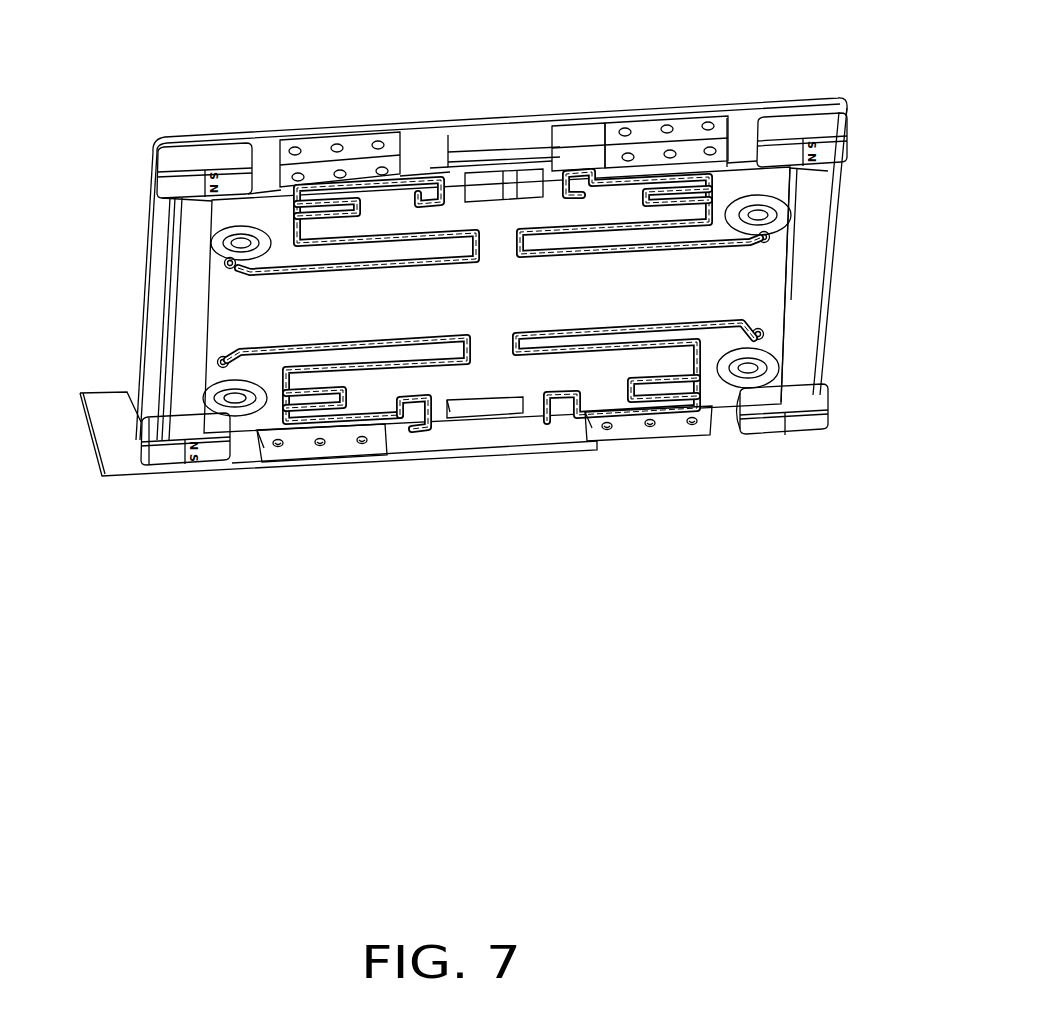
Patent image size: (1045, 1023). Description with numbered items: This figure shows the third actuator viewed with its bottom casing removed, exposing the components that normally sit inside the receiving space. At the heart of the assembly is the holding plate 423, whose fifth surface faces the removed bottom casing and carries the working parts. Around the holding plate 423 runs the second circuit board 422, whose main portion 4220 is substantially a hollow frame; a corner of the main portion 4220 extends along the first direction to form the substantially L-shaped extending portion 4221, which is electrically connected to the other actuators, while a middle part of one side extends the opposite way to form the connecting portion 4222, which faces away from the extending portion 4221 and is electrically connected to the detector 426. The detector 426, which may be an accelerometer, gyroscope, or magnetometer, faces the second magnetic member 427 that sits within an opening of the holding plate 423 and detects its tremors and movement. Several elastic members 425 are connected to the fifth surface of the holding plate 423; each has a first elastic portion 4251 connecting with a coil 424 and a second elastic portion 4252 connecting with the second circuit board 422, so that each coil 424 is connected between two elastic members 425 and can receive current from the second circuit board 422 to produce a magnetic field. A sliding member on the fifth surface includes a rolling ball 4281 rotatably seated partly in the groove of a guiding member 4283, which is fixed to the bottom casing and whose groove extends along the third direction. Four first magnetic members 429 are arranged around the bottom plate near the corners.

The second circuit board 422 is at (262, 156).
The main portion 4220 is at (146, 200).
The extending portion 4221 is at (106, 456).
The connecting portion 4222 is at (511, 135).
The holding plate 423 is at (240, 313).
The coil 424 is at (806, 295).
The elastic member 425 is at (320, 492).
The first elastic portion 4251 is at (415, 422).
The second elastic portion 4252 is at (343, 455).
The detector 426 is at (531, 165).
The second magnetic member 427 is at (478, 190).
The rolling ball 4281 is at (745, 390).
The guiding member 4283 is at (775, 368).
The first magnetic member 429 is at (797, 425).